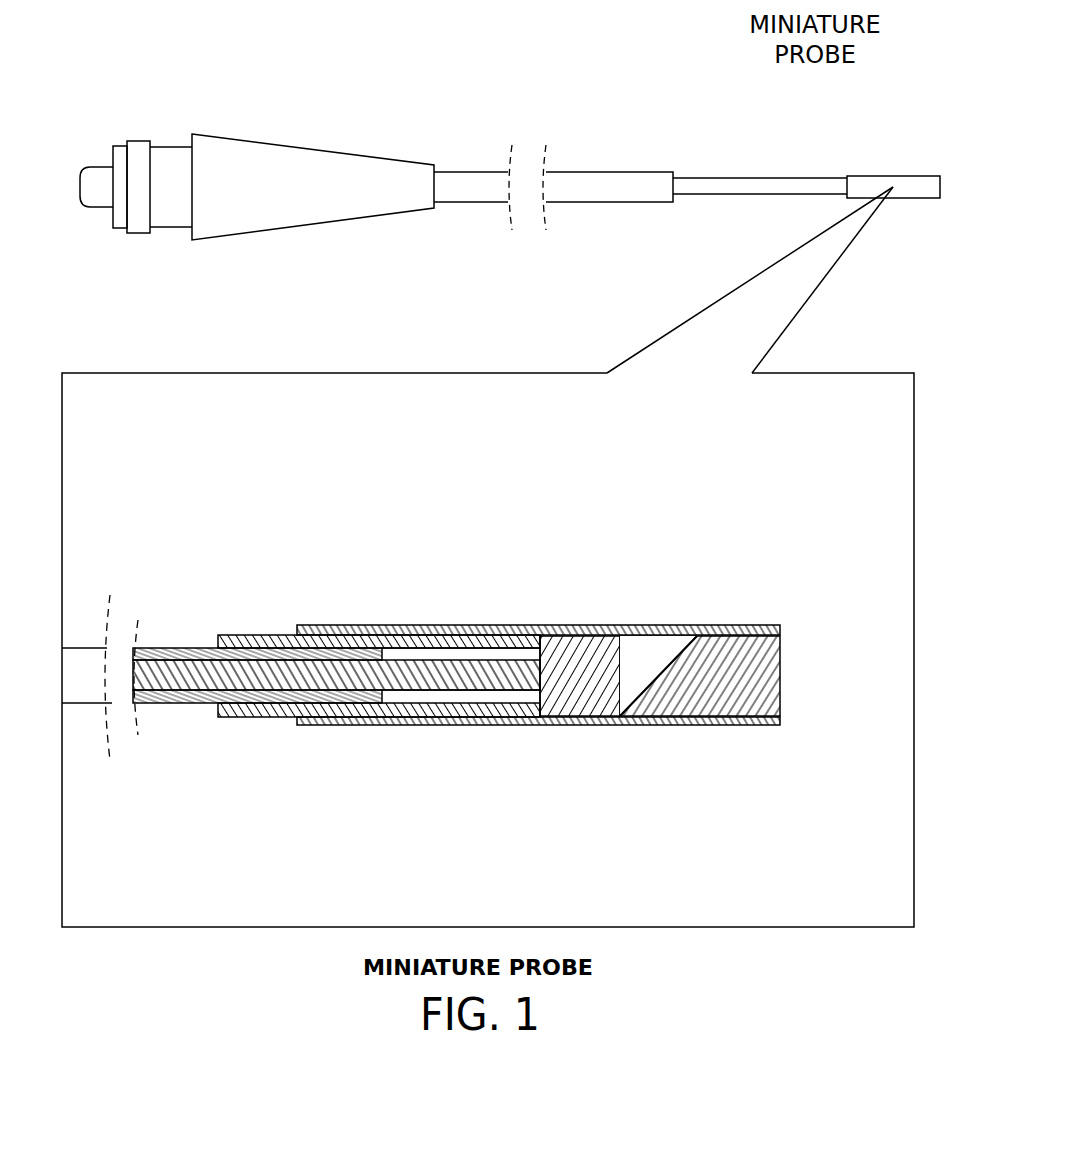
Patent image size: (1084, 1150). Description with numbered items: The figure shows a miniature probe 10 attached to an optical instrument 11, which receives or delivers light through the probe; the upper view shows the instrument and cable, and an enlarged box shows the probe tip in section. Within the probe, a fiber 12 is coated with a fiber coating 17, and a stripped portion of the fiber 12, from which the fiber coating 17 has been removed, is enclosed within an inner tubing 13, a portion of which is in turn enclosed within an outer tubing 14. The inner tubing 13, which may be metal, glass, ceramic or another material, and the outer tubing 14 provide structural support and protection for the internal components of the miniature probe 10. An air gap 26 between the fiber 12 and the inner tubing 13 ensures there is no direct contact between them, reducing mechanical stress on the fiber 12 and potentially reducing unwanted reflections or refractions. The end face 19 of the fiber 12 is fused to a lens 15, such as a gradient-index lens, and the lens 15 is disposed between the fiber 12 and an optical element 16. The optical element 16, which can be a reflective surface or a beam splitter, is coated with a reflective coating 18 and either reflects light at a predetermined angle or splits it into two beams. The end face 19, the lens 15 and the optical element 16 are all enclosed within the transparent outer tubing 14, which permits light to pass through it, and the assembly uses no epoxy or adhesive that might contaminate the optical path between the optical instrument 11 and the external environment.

The miniature probe 10 is at (859, 158).
The optical instrument 11 is at (379, 197).
The fiber 12 is at (258, 677).
The inner tubing 13 is at (312, 643).
The outer tubing 14 is at (417, 726).
The lens 15 is at (580, 658).
The optical element 16 is at (723, 690).
The fiber coating 17 is at (190, 646).
The reflective coating 18 is at (668, 656).
The end face 19 is at (541, 675).
The air gap 26 is at (497, 653).